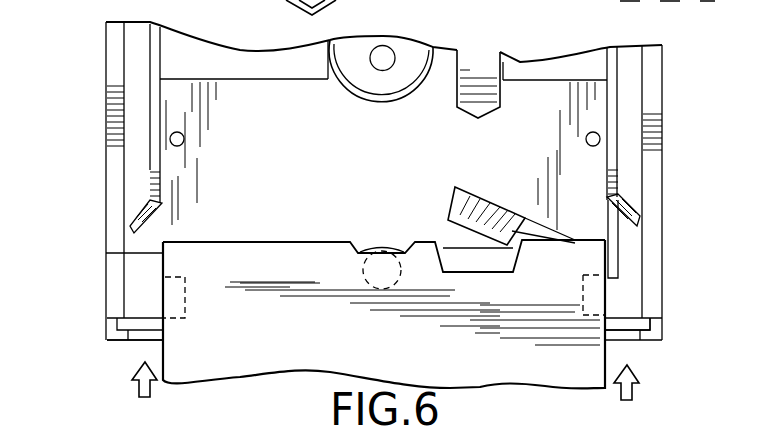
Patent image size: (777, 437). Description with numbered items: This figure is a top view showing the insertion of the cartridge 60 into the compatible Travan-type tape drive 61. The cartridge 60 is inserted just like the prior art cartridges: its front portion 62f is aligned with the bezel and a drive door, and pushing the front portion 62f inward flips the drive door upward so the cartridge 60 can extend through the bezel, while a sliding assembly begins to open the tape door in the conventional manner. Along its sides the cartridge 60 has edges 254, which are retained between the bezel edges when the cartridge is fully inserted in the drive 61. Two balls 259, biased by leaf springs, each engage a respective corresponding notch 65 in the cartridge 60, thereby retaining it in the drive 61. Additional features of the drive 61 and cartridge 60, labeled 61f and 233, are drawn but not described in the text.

The cartridge 60 is at (518, 368).
The drive 61 is at (661, 138).
The housing flange 61f is at (650, 341).
The front portion 62f is at (282, 240).
The notches 65 is at (190, 320).
The bottom wall 233 is at (160, 342).
The edges 254 is at (106, 253).
The balls 259 is at (184, 139).